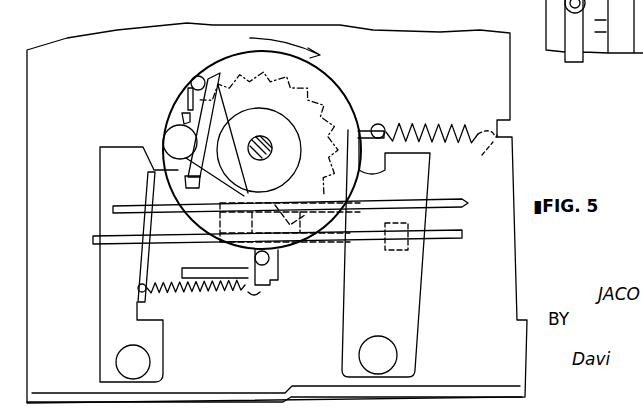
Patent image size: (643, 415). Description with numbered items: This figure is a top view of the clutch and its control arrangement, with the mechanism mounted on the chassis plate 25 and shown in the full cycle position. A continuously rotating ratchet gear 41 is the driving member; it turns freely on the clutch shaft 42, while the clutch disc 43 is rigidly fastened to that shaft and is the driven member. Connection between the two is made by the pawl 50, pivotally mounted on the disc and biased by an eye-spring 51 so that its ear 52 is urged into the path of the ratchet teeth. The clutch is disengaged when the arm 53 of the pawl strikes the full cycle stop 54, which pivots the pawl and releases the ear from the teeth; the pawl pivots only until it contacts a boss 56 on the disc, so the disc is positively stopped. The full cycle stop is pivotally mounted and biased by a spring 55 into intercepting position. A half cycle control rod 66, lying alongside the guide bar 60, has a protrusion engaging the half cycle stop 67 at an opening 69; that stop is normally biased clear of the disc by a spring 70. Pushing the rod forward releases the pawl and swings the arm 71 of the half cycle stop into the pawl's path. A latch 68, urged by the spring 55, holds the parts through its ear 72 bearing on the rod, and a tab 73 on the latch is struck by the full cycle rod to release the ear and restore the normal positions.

The frame plate 25 is at (427, 42).
The ratchet gear 41 is at (337, 88).
The clutch shaft 42 is at (272, 147).
The clutch disc 43 is at (340, 117).
The pawl 50 is at (174, 119).
The eye-spring 51 is at (225, 160).
The ear 52 is at (188, 97).
The arm 53 is at (146, 137).
The full cycle stop 54 is at (110, 178).
The spring 55 is at (210, 298).
The boss 56 is at (197, 77).
The slide bar 60 is at (447, 205).
The half cycle control rod 66 is at (332, 237).
The half cycle stop 67 is at (436, 319).
The latch 68 is at (289, 277).
The opening 69 is at (395, 248).
The spring 70 is at (437, 122).
The arm 71 is at (418, 152).
The ear 72 is at (187, 247).
The tab 73 is at (260, 202).